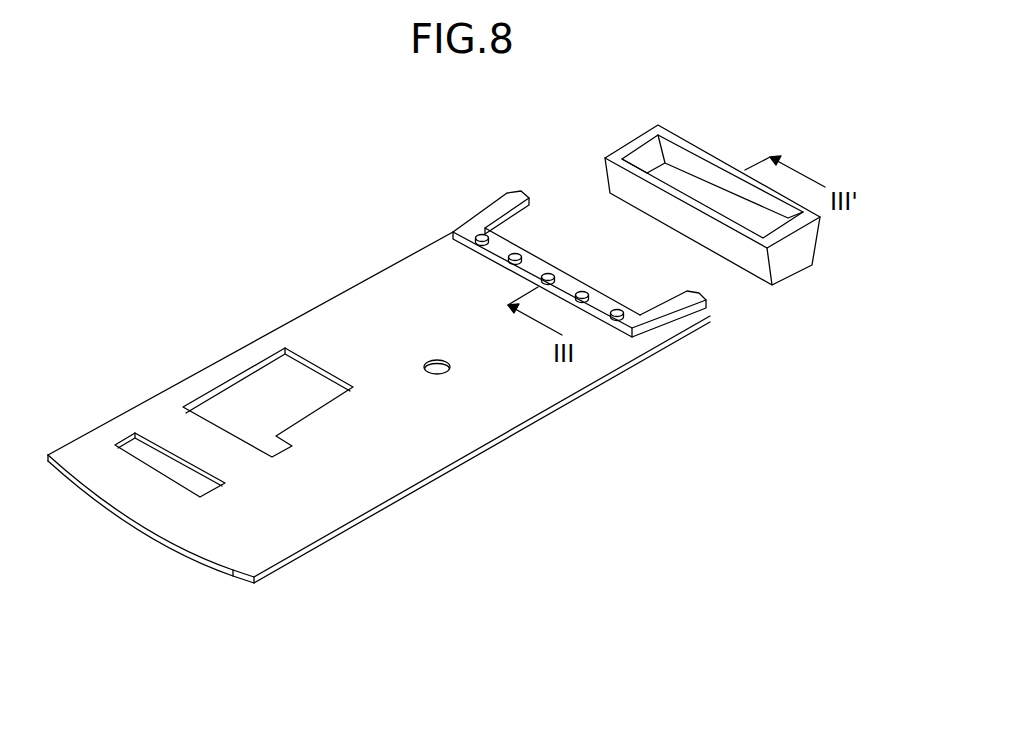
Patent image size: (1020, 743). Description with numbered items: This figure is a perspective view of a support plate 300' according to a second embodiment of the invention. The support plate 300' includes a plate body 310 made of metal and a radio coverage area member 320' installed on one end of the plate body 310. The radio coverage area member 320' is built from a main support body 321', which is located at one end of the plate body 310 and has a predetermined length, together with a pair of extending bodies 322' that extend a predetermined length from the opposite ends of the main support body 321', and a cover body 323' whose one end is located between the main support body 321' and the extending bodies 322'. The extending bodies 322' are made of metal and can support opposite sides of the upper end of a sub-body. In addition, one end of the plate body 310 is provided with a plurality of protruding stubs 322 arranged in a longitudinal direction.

The support plate 300' is at (434, 382).
The plate body 310 is at (233, 572).
The radio coverage area member 320' is at (652, 310).
The main support body 321' is at (604, 342).
The protruding stubs 322 is at (563, 346).
The extending bodies 322' is at (635, 323).
The cover body 323' is at (742, 290).